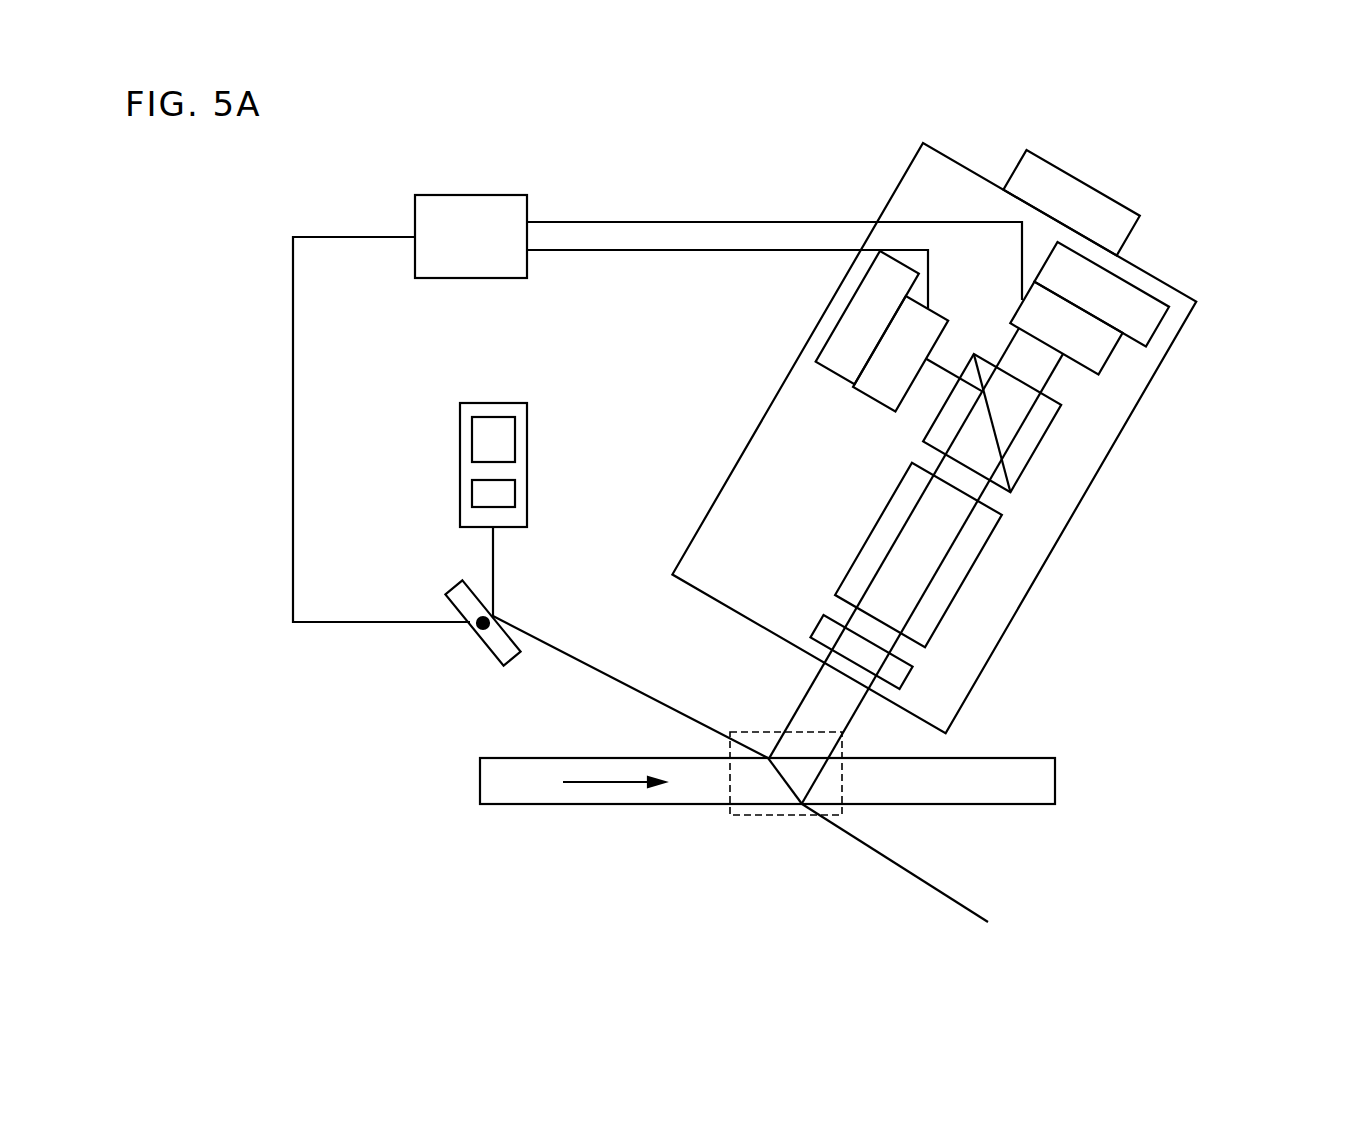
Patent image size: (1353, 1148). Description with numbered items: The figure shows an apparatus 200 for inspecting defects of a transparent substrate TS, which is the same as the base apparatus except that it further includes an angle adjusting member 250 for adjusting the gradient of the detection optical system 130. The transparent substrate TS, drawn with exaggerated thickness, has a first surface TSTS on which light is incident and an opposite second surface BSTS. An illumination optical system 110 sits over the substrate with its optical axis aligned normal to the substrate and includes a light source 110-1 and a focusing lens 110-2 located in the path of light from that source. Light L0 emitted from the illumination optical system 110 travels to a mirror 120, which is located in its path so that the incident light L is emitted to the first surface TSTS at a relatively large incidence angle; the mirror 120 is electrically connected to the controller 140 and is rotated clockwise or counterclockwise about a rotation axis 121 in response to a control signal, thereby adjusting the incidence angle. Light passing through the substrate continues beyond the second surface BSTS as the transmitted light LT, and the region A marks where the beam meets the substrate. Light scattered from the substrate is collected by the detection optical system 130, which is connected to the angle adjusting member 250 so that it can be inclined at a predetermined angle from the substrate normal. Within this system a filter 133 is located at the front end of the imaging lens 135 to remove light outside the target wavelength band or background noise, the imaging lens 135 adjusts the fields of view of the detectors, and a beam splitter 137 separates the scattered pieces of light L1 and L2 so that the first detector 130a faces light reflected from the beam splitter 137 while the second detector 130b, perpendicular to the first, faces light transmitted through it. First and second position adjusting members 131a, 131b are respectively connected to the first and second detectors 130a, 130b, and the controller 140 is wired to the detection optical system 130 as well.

The apparatus 200 is at (1048, 99).
The angle adjusting member 250 is at (1083, 180).
The detection optical system 130 is at (1167, 283).
The first position adjusting member 131a is at (830, 375).
The first detector 130a is at (880, 403).
The second position adjusting member 131b is at (1157, 331).
The second detector 130b is at (1110, 360).
The beam splitter 137 is at (1038, 450).
The imaging lens 135 is at (967, 576).
The filter 133 is at (910, 683).
The controller 140 is at (472, 195).
The illumination optical system 110 is at (362, 443).
The light source 110-1 is at (472, 440).
The focusing lens 110-2 is at (472, 493).
The mirror 120 is at (487, 650).
The rotation axis 121 is at (477, 626).
The light L0 is at (493, 553).
The incident light L is at (618, 683).
The piece of light L1 is at (807, 690).
The piece of light L2 is at (857, 710).
The transmitted light LT is at (785, 782).
The inspection region A is at (730, 779).
The transparent substrate TS is at (1058, 780).
The first surface TSTS is at (1027, 758).
The second surface BSTS is at (1027, 805).